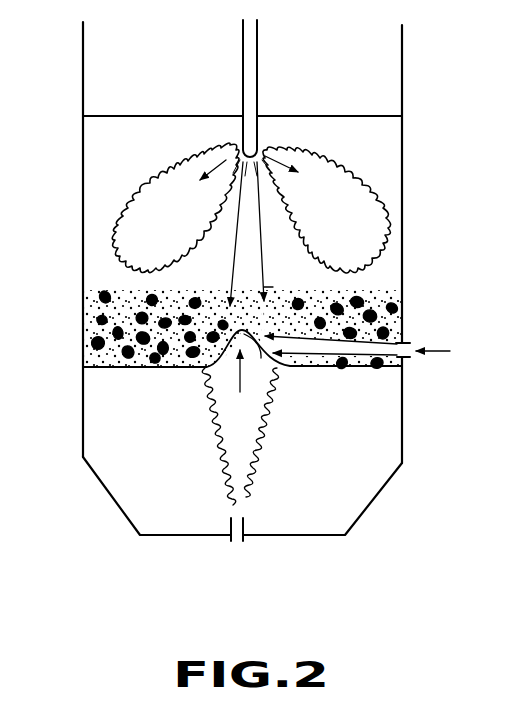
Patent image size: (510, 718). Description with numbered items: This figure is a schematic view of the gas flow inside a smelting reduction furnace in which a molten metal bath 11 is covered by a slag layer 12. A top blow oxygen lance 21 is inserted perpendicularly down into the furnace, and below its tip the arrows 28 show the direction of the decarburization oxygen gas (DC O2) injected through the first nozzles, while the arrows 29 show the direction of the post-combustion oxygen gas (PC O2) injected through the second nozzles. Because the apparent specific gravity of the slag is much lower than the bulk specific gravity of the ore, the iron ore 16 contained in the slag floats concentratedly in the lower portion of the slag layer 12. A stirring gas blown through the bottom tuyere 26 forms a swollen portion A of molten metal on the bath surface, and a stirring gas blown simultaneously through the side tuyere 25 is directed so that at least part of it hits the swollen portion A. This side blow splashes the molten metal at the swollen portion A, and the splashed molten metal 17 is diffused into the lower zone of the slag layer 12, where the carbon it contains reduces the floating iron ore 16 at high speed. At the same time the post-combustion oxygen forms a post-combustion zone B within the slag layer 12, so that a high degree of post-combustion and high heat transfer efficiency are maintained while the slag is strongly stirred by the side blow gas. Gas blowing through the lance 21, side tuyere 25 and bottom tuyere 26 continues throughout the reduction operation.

The molten metal bath 11 is at (402, 440).
The slag layer 12 is at (402, 172).
The iron ore 16 is at (385, 332).
The splashed molten metal 17 is at (133, 367).
The top blow oxygen lance 21 is at (243, 62).
The side tuyere 25 is at (397, 345).
The bottom tuyere 26 is at (229, 538).
The arrows 28 is at (232, 265).
The arrows 29 is at (268, 152).
The swollen portion of molten metal A is at (240, 419).
The post-combustion zone B is at (375, 240).